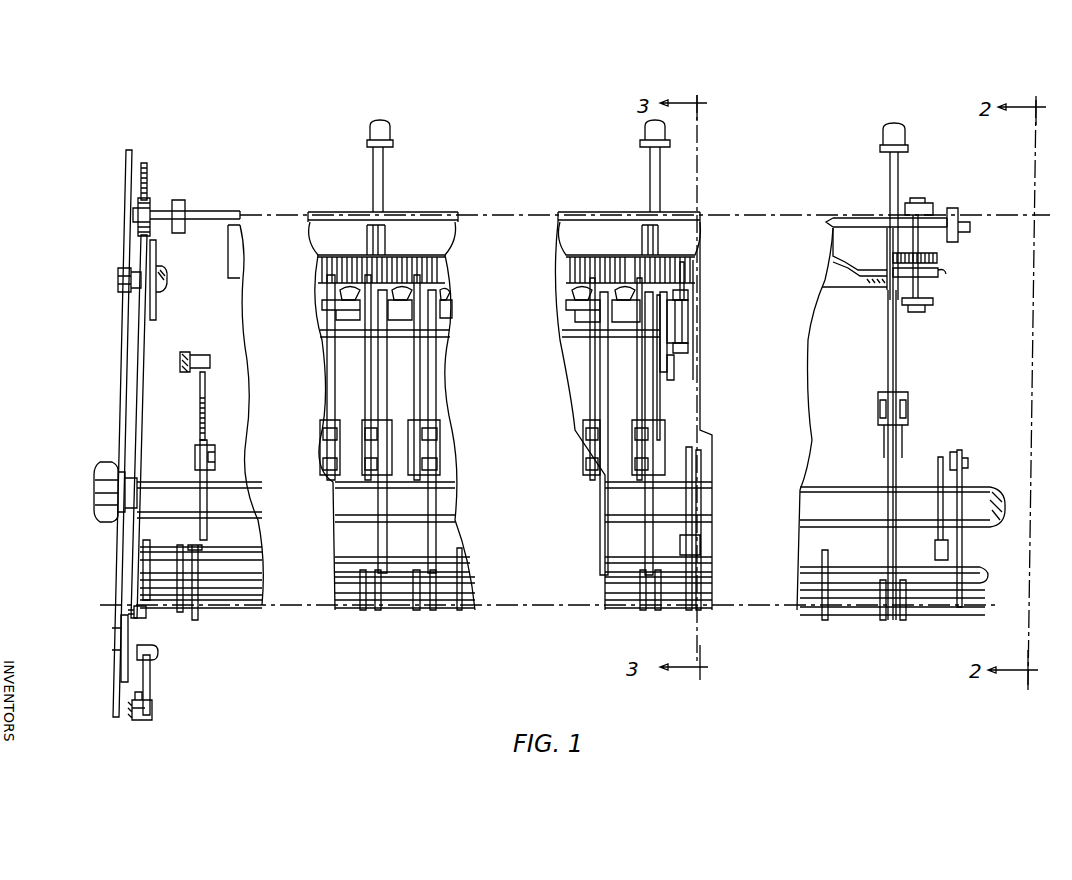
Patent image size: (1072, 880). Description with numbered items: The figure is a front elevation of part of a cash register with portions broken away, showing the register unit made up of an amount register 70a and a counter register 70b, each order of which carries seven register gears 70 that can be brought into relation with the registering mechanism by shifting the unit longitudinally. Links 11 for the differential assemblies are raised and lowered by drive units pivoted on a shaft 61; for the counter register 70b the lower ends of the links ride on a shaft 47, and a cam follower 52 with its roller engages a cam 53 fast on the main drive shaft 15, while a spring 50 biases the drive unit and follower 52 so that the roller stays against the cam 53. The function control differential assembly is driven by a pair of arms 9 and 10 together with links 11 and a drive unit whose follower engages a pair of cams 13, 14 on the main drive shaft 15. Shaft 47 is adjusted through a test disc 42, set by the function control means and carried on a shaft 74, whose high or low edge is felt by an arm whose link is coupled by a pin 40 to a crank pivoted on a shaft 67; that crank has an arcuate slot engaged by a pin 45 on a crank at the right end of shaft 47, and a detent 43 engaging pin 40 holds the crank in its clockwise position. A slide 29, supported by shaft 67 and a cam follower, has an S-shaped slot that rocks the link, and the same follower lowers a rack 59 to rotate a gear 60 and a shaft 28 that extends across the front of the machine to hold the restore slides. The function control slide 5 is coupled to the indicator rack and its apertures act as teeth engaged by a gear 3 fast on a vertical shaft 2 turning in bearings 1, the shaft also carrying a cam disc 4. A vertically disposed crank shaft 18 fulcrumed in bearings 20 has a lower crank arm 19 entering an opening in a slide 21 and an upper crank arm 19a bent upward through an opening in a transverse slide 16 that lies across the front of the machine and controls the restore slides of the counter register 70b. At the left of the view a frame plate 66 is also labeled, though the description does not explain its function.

The bearings 1 is at (933, 208).
The vertical shaft 2 is at (918, 252).
The gear 3 is at (935, 258).
The cam disc 4 is at (927, 272).
The function control slide 5 is at (892, 263).
The arm 9 is at (887, 380).
The arm 10 is at (895, 355).
The links 11 is at (897, 457).
The cam 13 is at (942, 452).
The cam 14 is at (960, 450).
The main drive shaft 15 is at (977, 507).
The slide 16 is at (858, 272).
The crank shaft 18 is at (683, 313).
The crank arm 19 is at (668, 360).
The crank arm 19a is at (684, 275).
The bearings 20 is at (686, 293).
The slide 21 is at (670, 372).
The shaft 28 is at (967, 225).
The slide 29 is at (121, 636).
The pin 40 is at (150, 667).
The test disc 42 is at (150, 313).
The detent 43 is at (150, 707).
The pin 45 is at (136, 612).
The shaft 47 is at (225, 600).
The spring 50 is at (208, 393).
The cam follower 52 is at (200, 540).
The cam 53 is at (208, 440).
The rack 59 is at (138, 640).
The gear 60 is at (150, 210).
The shaft 61 is at (248, 567).
The plate 66 is at (116, 697).
The shaft 67 is at (158, 653).
The register gears 70 is at (403, 270).
The amount register 70a is at (692, 253).
The counter register 70b is at (597, 253).
The shaft 74 is at (157, 283).